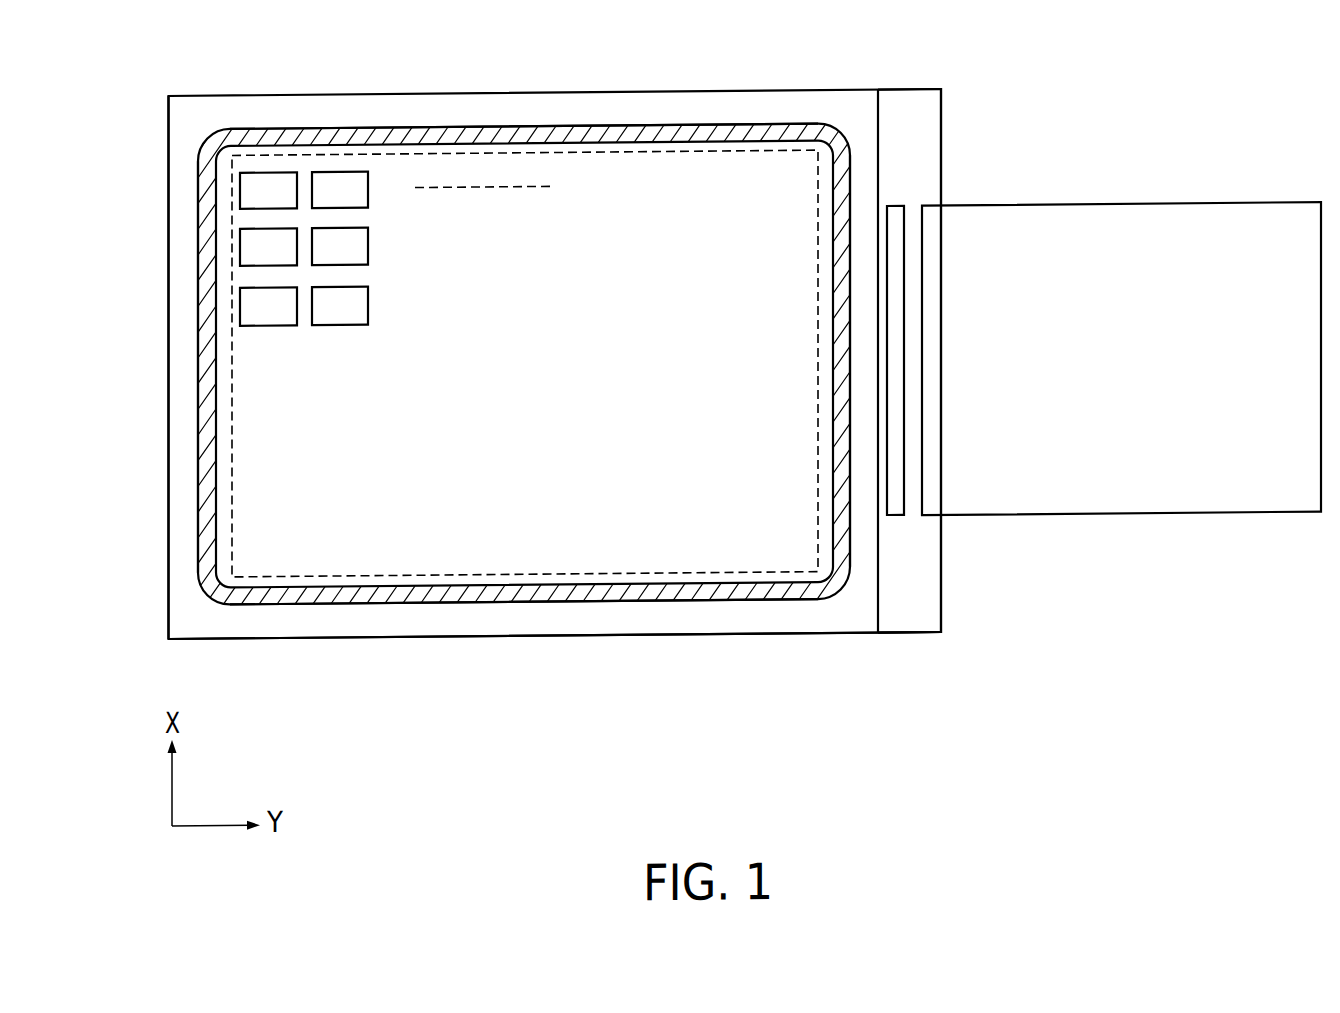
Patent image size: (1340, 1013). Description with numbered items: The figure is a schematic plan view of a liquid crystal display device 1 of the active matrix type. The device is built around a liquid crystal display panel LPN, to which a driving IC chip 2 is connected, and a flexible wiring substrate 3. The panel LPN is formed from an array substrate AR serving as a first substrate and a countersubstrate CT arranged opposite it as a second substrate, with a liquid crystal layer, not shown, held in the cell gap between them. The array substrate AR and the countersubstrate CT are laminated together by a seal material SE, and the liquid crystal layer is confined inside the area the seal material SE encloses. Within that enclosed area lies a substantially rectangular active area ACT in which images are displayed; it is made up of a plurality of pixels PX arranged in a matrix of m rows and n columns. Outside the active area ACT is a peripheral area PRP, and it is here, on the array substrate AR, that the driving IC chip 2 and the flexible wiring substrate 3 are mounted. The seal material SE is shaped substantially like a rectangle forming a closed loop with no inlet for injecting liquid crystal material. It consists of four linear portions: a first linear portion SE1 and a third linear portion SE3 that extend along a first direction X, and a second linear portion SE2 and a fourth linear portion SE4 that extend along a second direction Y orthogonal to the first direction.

The liquid crystal display device 1 is at (966, 81).
The driving IC chip 2 is at (900, 210).
The flexible wiring substrate 3 is at (1133, 217).
The pixel PX is at (268, 170).
The seal material SE is at (620, 113).
The first linear portion SE1 is at (198, 267).
The second linear portion SE2 is at (500, 126).
The third linear portion SE3 is at (851, 190).
The fourth linear portion SE4 is at (440, 602).
The active area ACT is at (610, 586).
The peripheral area PRP is at (184, 434).
The countersubstrate CT is at (820, 624).
The array substrate AR is at (933, 598).
The liquid crystal display panel LPN is at (916, 645).